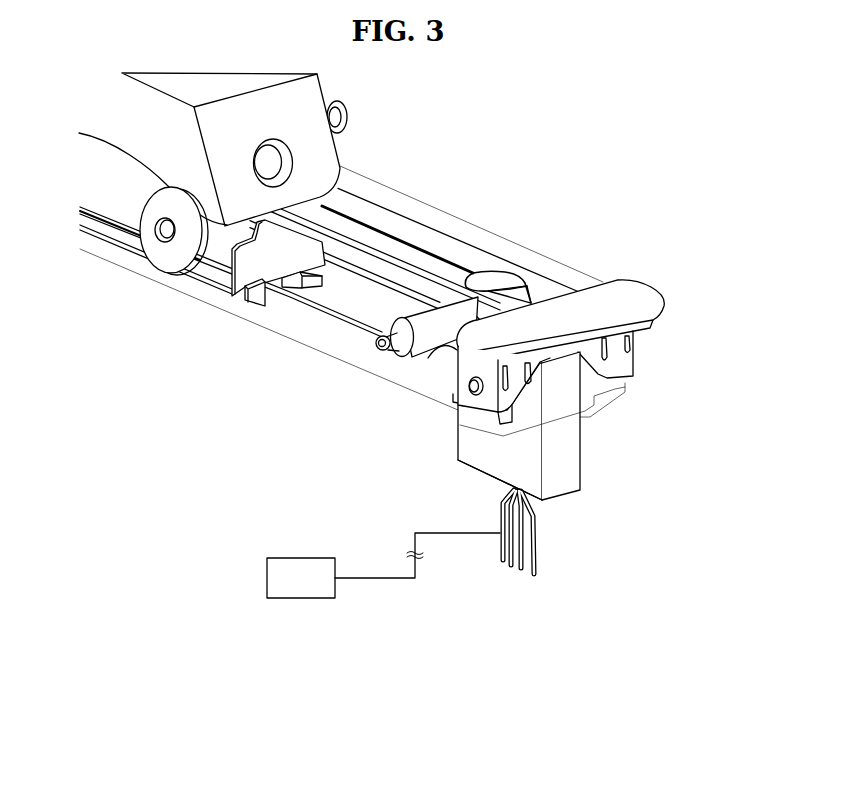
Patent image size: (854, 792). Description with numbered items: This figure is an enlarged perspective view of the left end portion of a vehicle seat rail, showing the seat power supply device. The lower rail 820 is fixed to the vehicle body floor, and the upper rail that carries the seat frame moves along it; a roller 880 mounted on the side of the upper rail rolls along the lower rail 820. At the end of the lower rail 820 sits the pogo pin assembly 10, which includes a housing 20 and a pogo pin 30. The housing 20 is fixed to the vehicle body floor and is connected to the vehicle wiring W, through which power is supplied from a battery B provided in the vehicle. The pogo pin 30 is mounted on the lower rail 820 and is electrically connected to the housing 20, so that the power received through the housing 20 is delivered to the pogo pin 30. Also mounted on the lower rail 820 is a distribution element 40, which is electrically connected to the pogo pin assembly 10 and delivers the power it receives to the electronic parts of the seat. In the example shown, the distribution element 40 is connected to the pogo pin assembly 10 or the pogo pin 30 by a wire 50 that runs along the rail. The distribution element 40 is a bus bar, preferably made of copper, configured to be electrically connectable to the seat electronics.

The pogo pin assembly 10 is at (660, 455).
The housing 20 is at (572, 470).
The pogo pin 30 is at (573, 403).
The distribution element 40 is at (220, 263).
The wire 50 is at (333, 312).
The lower rail 820 is at (625, 387).
The roller 880 is at (172, 258).
The battery B is at (293, 557).
The wiring W is at (541, 546).